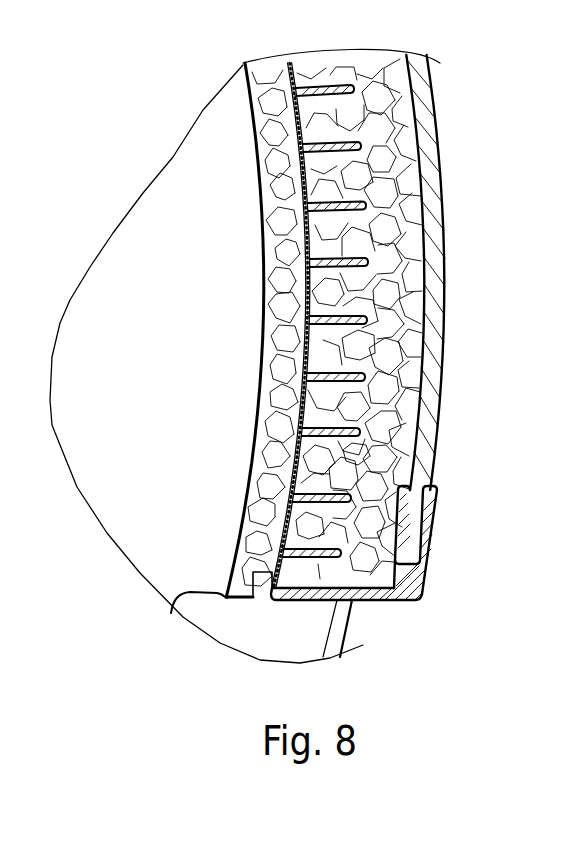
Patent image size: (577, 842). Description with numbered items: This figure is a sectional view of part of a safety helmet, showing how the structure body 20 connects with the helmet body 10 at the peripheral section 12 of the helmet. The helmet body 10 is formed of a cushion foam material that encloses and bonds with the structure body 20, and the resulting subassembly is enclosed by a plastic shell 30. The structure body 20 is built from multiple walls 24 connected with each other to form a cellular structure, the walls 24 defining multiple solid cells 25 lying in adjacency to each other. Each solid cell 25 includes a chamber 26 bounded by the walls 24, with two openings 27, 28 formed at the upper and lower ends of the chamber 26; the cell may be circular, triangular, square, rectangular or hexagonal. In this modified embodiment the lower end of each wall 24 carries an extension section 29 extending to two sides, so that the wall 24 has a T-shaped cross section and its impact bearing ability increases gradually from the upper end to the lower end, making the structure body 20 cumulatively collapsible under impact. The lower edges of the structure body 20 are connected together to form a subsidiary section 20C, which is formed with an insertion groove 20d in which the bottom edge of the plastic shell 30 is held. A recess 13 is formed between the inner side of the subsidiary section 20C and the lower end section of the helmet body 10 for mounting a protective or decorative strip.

The helmet body 10 is at (244, 394).
The peripheral section 12 is at (410, 240).
The recess 13 is at (263, 588).
The structure body 20 is at (372, 145).
The wall 24 is at (445, 371).
The solid cell 25 is at (386, 405).
The chamber 26 is at (358, 458).
The opening 27 is at (444, 313).
The opening 28 is at (296, 169).
The extension section 29 is at (306, 255).
The plastic shell 30 is at (453, 272).
The insertion groove 20d is at (437, 527).
The subsidiary section 20C is at (413, 582).